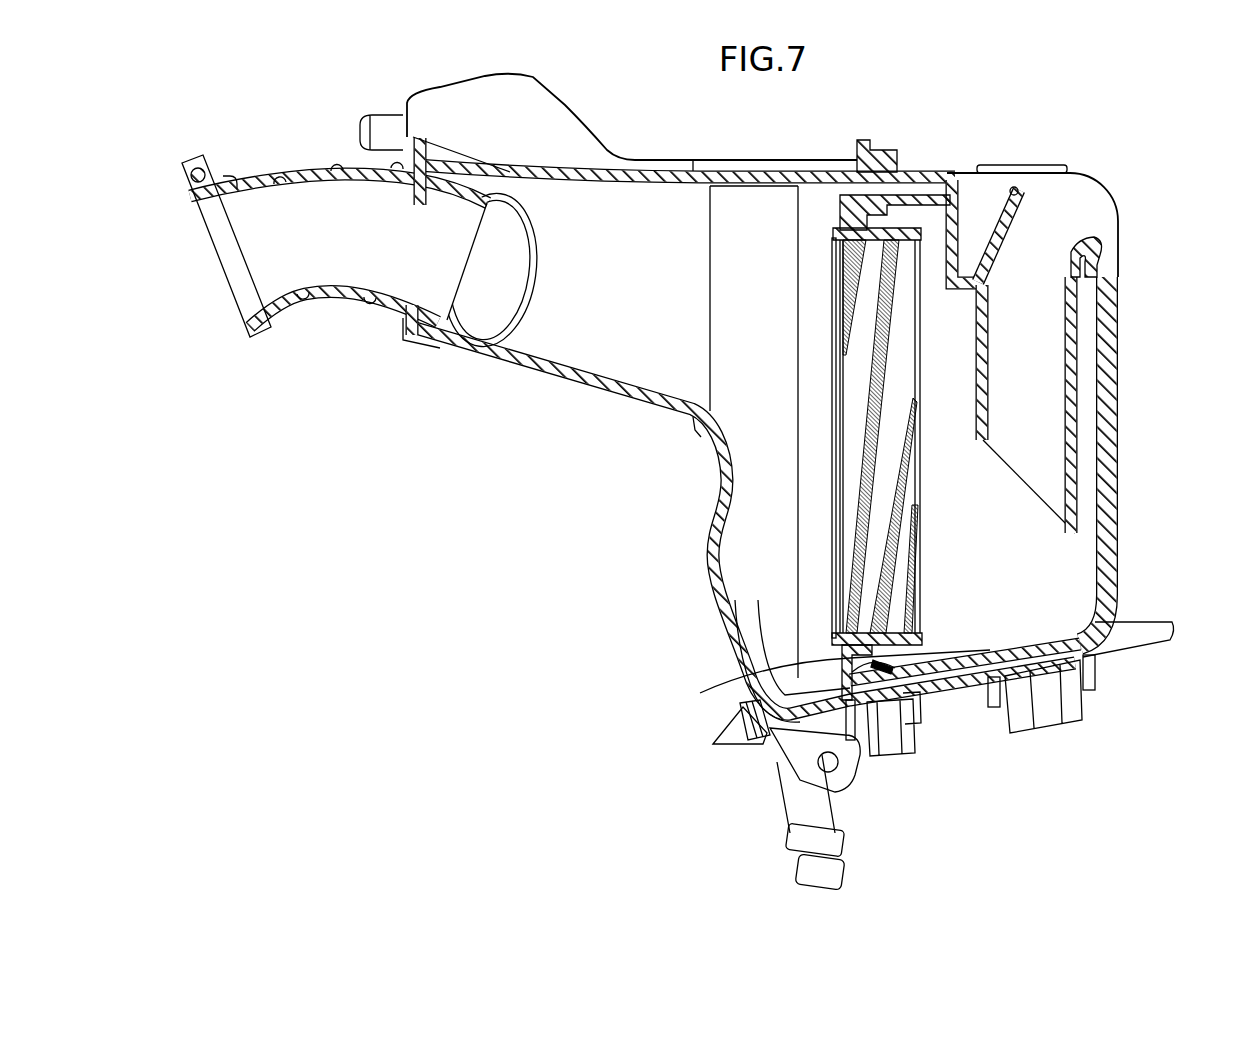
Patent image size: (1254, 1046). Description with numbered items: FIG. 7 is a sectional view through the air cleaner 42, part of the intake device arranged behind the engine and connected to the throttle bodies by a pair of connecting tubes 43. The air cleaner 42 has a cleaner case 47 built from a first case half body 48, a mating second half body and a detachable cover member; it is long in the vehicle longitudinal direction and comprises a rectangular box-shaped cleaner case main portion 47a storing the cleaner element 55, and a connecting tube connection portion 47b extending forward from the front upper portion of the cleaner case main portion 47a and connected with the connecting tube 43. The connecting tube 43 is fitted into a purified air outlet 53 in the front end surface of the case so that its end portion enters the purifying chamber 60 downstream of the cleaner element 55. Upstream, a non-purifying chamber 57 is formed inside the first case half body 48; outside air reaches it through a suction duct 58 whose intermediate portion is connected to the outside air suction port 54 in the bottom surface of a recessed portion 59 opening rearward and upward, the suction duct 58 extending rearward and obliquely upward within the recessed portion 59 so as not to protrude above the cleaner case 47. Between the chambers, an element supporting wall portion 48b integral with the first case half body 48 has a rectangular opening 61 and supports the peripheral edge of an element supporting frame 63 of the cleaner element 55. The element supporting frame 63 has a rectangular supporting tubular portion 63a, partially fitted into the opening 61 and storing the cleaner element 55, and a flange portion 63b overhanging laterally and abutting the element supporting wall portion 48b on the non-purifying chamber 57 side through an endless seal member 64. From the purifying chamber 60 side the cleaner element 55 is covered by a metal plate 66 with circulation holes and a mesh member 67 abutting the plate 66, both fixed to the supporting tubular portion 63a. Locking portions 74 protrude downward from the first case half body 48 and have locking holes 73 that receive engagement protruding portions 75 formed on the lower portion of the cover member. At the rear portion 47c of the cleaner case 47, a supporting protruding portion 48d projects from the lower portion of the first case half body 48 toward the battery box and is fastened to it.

The air cleaner 42 is at (702, 482).
The connecting tube 43 is at (338, 298).
The cleaner case 47 is at (717, 398).
The cleaner case main portion 47a is at (718, 557).
The connecting tube connection portion 47b is at (543, 373).
The rear portion 47c is at (1120, 355).
The first case half body 48 is at (1031, 400).
The element supporting wall portion 48b is at (907, 195).
The supporting protruding portion 48d is at (1143, 638).
The purified air outlet 53 is at (413, 195).
The outside air suction port 54 is at (1093, 245).
The cleaner element 55 is at (903, 487).
The non-purifying chamber 57 is at (988, 564).
The suction duct 58 is at (1105, 385).
The recessed portion 59 is at (960, 228).
The purifying chamber 60 is at (743, 303).
The opening 61 is at (838, 640).
The element supporting frame 63 is at (930, 236).
The supporting tubular portion 63a is at (925, 640).
The flange portion 63b is at (935, 687).
The seal member 64 is at (797, 677).
The metal plate 66 is at (837, 480).
The mesh member 67 is at (830, 415).
The locking hole 73 is at (1095, 612).
The locking portion 74 is at (1086, 670).
The engagement protruding portion 75 is at (1037, 724).